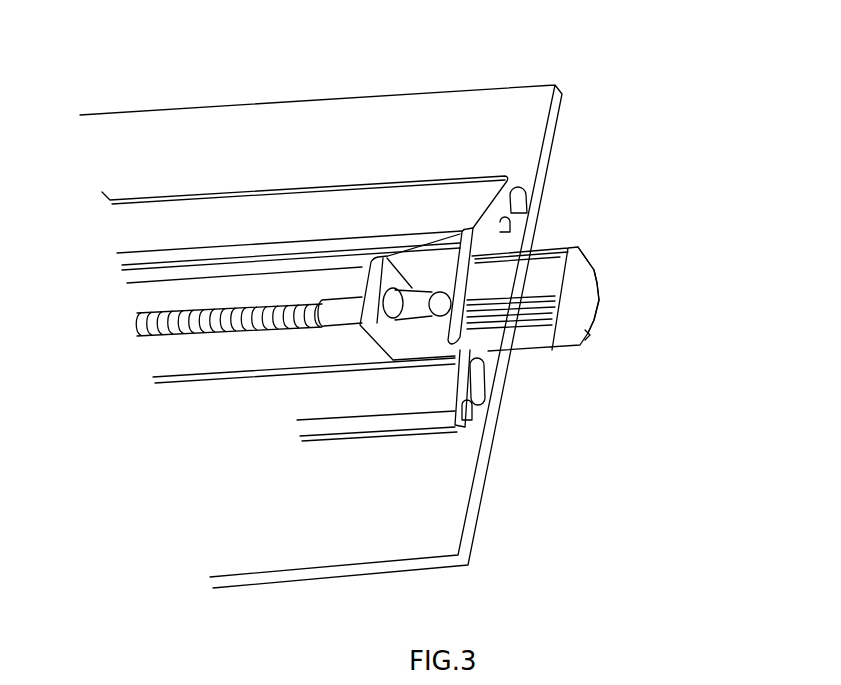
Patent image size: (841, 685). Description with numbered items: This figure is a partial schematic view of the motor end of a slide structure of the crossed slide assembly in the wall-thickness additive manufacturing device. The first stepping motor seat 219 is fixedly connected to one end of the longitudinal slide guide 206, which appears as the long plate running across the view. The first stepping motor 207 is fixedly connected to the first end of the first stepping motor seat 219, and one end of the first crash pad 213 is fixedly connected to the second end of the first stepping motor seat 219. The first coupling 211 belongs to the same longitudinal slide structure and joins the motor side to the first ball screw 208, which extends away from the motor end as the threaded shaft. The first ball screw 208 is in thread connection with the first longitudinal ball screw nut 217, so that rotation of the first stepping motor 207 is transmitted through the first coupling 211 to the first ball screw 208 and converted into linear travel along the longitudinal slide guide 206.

The longitudinal slide guide 206 is at (493, 128).
The first stepping motor 207 is at (573, 323).
The first ball screw 208 is at (282, 310).
The first coupling 211 is at (441, 312).
The first crash pad 213 is at (405, 322).
The first longitudinal ball screw nut 217 is at (343, 316).
The first stepping motor seat 219 is at (490, 238).